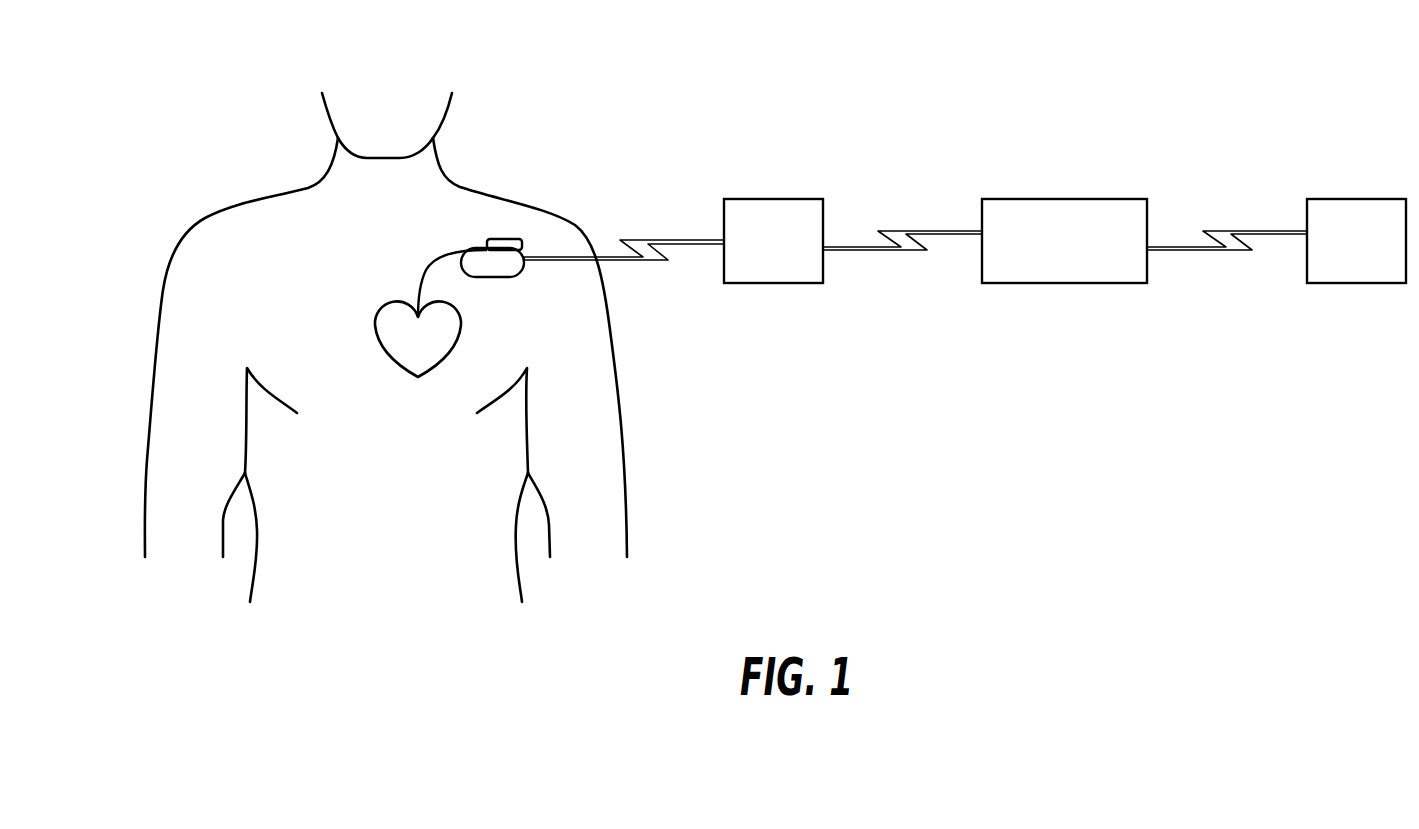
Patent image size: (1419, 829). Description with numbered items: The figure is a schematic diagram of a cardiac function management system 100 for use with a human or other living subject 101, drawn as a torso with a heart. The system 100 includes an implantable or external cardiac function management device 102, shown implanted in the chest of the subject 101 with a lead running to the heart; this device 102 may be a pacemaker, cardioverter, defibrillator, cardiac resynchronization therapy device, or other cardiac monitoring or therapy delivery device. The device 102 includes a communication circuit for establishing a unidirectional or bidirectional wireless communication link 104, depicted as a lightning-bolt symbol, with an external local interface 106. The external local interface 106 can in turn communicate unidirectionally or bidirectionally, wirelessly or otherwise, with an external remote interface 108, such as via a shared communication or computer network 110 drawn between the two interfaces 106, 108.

The cardiac function management system 100 is at (1300, 78).
The living subject 101 is at (282, 192).
The cardiac function management device 102 is at (492, 278).
The wireless communication link 104 is at (673, 240).
The external local interface 106 is at (775, 199).
The external remote interface 108 is at (1357, 199).
The communication or computer network 110 is at (1065, 199).